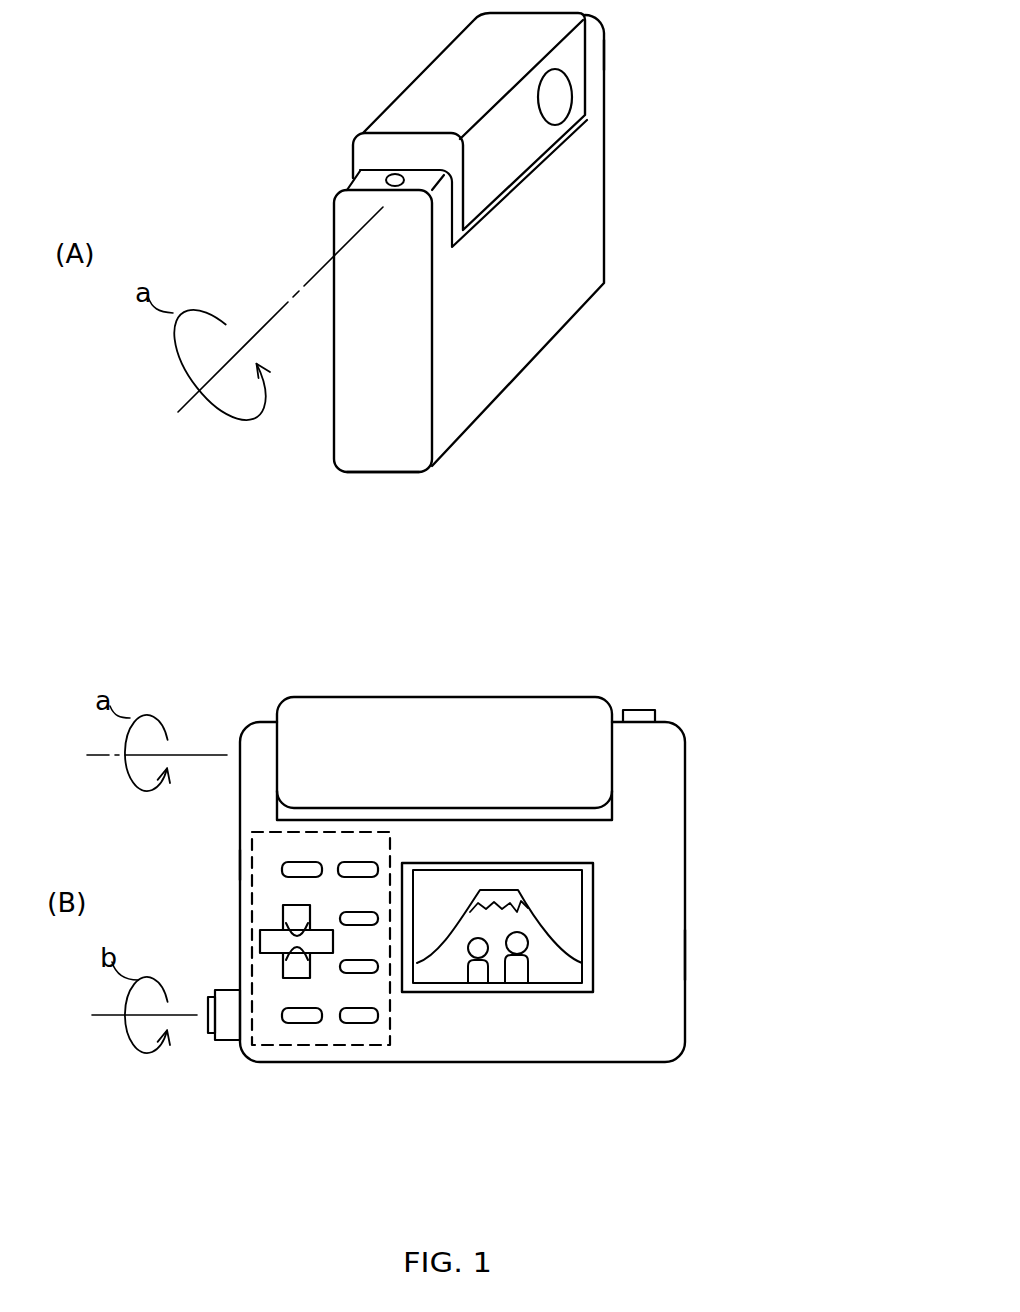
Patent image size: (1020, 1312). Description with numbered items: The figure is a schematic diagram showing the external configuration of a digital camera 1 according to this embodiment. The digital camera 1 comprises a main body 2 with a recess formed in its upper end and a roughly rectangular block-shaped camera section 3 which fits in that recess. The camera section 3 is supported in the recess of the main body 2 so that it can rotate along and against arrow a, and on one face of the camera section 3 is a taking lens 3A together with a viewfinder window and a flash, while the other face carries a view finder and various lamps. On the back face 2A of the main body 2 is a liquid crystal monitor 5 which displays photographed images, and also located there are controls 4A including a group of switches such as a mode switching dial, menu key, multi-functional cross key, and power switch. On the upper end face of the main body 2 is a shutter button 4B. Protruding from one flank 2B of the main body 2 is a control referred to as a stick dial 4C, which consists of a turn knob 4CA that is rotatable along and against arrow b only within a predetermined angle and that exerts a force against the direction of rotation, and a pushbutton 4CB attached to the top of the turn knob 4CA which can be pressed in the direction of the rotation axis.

The digital camera 1 is at (748, 463).
The main body 2 is at (604, 220).
The back face 2A is at (330, 450).
The flank 2B is at (605, 52).
The camera section 3 is at (409, 88).
The taking lens 3A is at (568, 98).
The controls 4A is at (337, 1047).
The shutter button 4B is at (385, 174).
The stick dial 4C is at (198, 1073).
The turn knob 4CA is at (223, 1040).
The pushbutton 4CB is at (182, 1048).
The liquid crystal monitor 5 is at (597, 977).